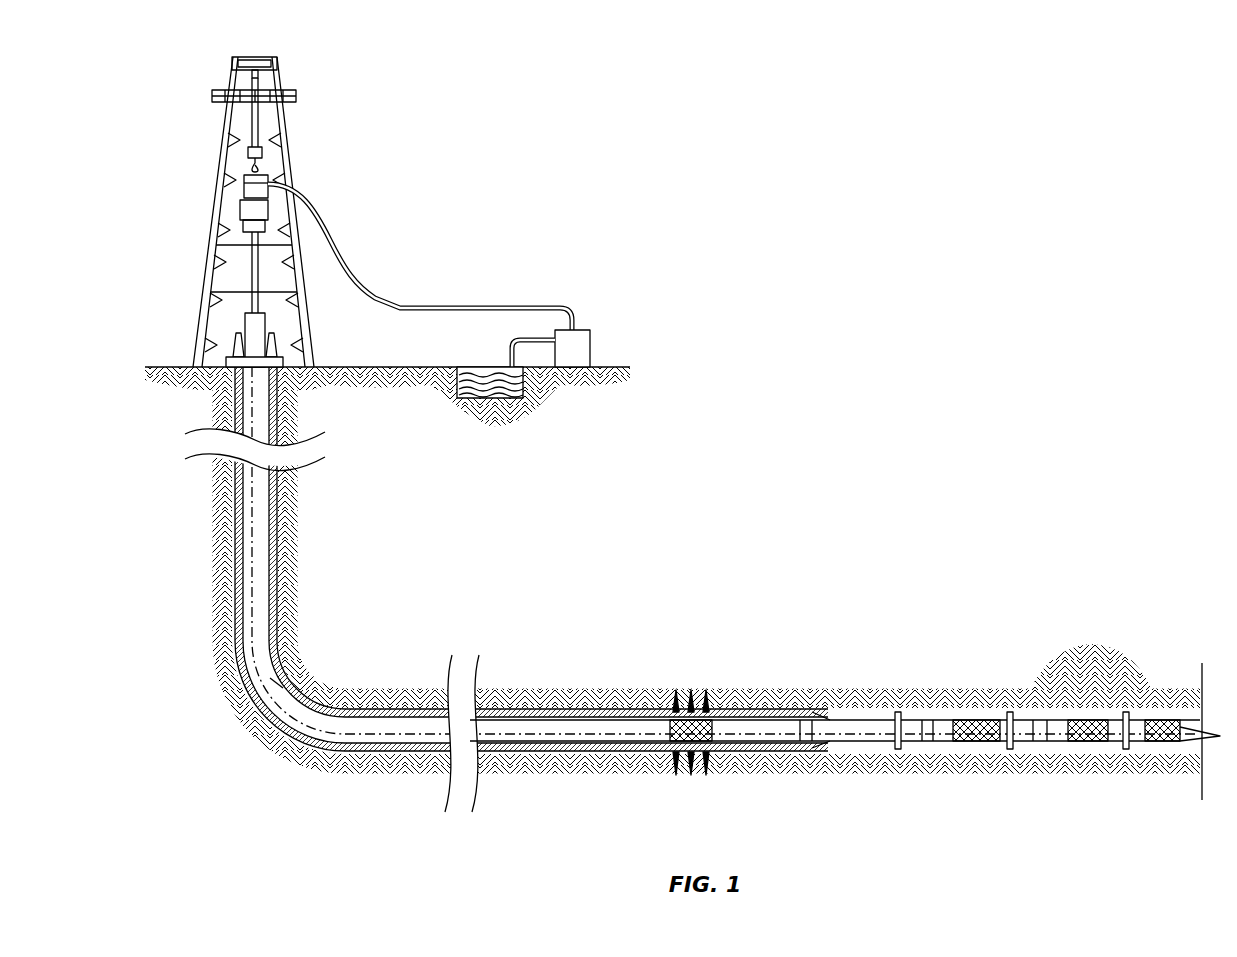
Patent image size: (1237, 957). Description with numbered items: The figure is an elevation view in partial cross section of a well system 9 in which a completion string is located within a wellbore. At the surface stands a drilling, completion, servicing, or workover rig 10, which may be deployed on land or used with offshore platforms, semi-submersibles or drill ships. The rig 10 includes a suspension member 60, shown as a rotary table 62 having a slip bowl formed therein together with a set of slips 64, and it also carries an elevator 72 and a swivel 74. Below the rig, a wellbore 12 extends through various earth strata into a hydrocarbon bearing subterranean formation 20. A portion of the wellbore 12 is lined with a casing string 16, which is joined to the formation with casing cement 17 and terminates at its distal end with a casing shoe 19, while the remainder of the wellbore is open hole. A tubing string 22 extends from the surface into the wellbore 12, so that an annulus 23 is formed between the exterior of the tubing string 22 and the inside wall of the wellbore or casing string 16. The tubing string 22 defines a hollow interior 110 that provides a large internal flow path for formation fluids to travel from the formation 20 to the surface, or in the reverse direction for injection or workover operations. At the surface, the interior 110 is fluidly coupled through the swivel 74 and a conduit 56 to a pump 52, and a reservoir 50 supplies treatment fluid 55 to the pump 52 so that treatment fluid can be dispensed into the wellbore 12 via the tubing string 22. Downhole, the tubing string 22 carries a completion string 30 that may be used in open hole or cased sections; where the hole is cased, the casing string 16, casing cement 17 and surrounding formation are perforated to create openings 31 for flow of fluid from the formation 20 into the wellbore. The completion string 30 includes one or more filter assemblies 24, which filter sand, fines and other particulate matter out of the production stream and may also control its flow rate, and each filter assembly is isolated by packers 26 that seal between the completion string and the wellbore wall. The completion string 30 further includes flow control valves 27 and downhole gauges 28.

The well system 9 is at (872, 130).
The rig 10 is at (288, 136).
The wellbore 12 is at (246, 512).
The casing string 16 is at (240, 582).
The casing cement 17 is at (279, 553).
The casing shoe 19 is at (829, 713).
The subterranean formation 20 is at (1081, 688).
The tubing string 22 is at (260, 680).
The annulus 23 is at (270, 500).
The filter assembly 24 is at (962, 742).
The packer 26 is at (901, 733).
The flow control valve 27 is at (1040, 722).
The downhole gauge 28 is at (927, 720).
The completion string 30 is at (848, 746).
The openings 31 is at (672, 755).
The reservoir 50 is at (508, 406).
The pump 52 is at (589, 330).
The treatment fluid 55 is at (466, 402).
The conduit 56 is at (456, 306).
The suspension member 60 is at (236, 357).
The rotary table 62 is at (285, 363).
The slips 64 is at (276, 345).
The elevator 72 is at (270, 236).
The swivel 74 is at (245, 187).
The hollow interior 110 is at (382, 734).